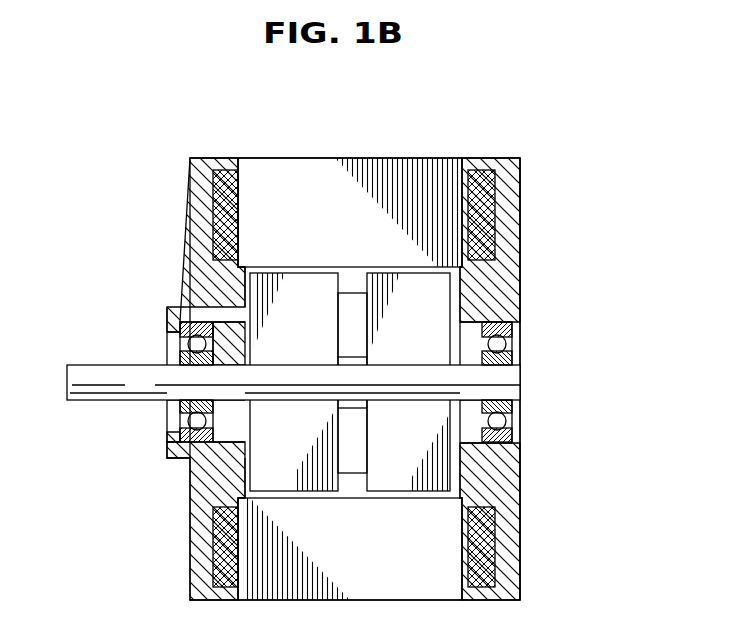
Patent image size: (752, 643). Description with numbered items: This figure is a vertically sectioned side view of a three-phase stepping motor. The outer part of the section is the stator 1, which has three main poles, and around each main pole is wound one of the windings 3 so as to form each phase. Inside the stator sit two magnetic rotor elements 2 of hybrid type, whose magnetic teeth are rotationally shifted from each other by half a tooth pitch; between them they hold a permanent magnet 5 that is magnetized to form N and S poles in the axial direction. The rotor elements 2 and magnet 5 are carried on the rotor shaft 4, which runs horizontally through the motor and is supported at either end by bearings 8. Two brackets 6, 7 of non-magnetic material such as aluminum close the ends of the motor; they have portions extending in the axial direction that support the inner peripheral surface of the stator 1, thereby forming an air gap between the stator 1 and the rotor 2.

The stator 1 is at (416, 158).
The magnetic rotor elements 2 is at (258, 293).
The windings 3 is at (215, 215).
The rotor shaft 4 is at (85, 388).
The permanent magnet 5 is at (355, 452).
The bracket 6 is at (187, 152).
The bracket 7 is at (512, 243).
The bearings 8 is at (190, 317).